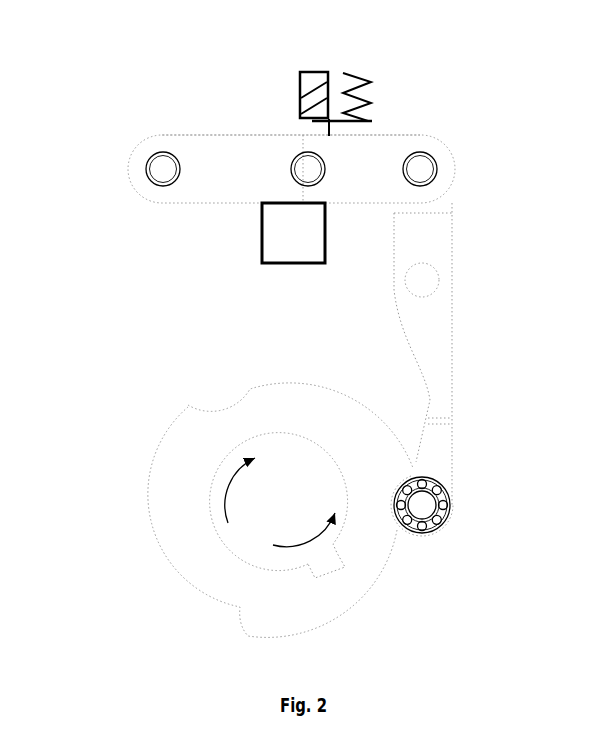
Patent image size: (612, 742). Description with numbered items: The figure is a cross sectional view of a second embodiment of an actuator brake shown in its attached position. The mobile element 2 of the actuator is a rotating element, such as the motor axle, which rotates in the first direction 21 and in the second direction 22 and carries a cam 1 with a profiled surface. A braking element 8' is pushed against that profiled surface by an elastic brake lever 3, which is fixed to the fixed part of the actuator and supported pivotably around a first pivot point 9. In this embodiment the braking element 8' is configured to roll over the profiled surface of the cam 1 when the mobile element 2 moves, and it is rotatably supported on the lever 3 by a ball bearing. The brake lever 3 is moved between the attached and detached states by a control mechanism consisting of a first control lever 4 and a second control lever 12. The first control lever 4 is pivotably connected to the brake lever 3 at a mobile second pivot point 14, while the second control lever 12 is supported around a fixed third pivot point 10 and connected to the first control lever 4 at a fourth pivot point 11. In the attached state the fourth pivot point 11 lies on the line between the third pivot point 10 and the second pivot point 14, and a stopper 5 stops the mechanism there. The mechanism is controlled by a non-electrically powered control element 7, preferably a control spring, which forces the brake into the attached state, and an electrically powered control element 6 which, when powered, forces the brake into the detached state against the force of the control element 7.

The cam 1 is at (242, 390).
The mobile element 2 is at (225, 545).
The brake lever 3 is at (465, 430).
The first control lever 4 is at (392, 143).
The stopper 5 is at (262, 248).
The electrically powered control element 6 is at (298, 85).
The non-electrically powered control element 7 is at (352, 85).
The rotating braking element 8' is at (484, 505).
The first pivot point 9 is at (425, 280).
The third pivot point 10 is at (160, 170).
The fourth pivot point 11 is at (312, 165).
The second control lever 12 is at (220, 145).
The second pivot point 14 is at (422, 166).
The first direction 21 is at (230, 512).
The second direction 22 is at (305, 542).